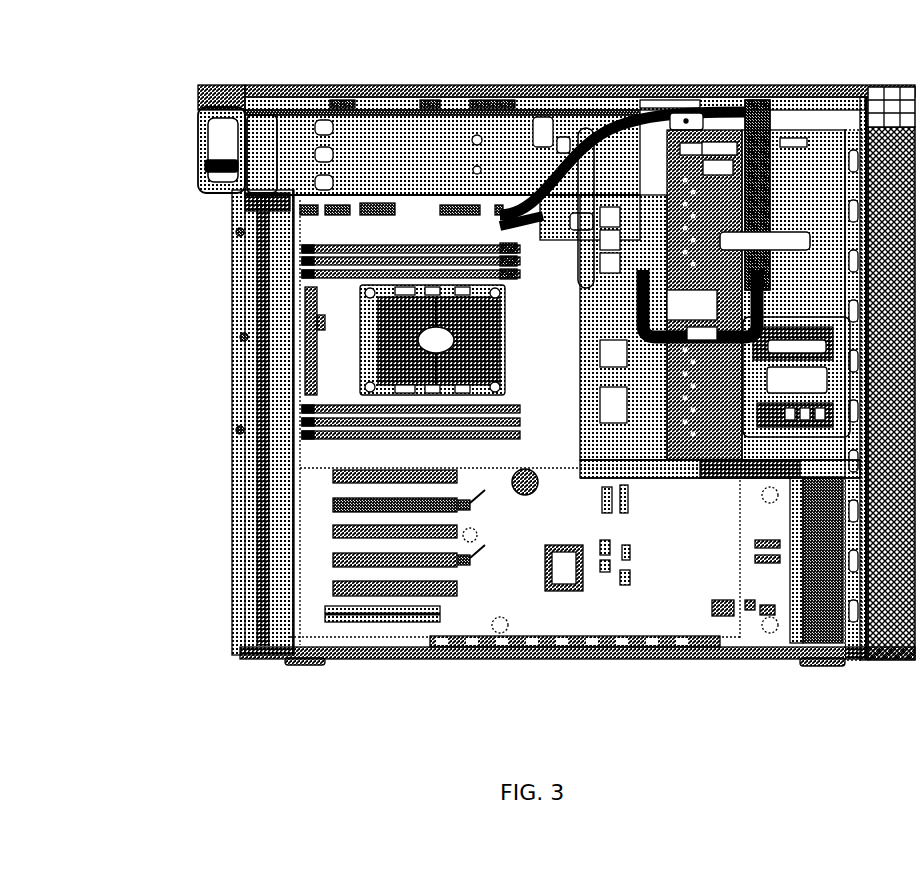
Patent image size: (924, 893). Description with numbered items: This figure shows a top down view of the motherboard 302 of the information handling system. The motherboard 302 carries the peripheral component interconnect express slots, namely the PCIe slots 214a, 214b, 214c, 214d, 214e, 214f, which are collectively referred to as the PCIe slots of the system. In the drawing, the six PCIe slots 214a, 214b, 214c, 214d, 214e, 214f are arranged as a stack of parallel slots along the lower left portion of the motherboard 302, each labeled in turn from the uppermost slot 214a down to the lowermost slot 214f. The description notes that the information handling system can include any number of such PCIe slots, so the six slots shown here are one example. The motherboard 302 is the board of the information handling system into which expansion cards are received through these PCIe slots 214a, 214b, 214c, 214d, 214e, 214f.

The motherboard 302 is at (165, 60).
The PCIe slot 214a is at (320, 480).
The PCIe slot 214b is at (323, 507).
The PCIe slot 214c is at (320, 532).
The PCIe slot 214d is at (322, 559).
The PCIe slot 214e is at (322, 588).
The PCIe slot 214f is at (323, 624).